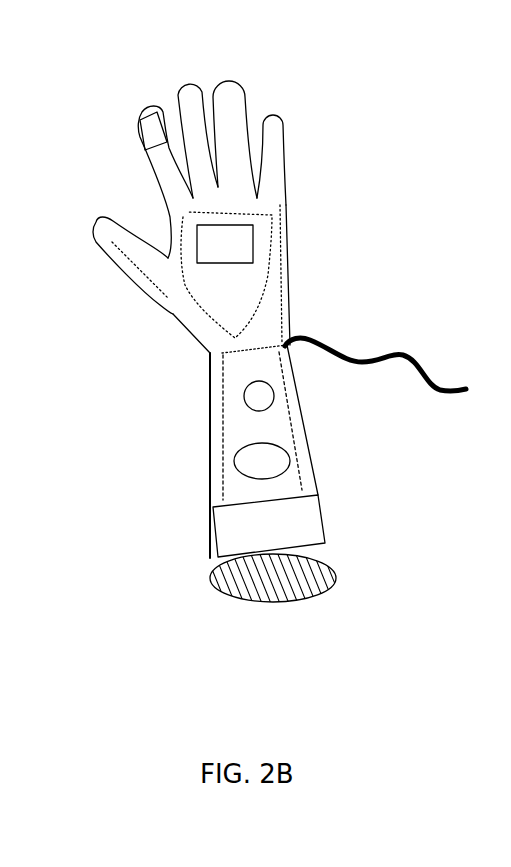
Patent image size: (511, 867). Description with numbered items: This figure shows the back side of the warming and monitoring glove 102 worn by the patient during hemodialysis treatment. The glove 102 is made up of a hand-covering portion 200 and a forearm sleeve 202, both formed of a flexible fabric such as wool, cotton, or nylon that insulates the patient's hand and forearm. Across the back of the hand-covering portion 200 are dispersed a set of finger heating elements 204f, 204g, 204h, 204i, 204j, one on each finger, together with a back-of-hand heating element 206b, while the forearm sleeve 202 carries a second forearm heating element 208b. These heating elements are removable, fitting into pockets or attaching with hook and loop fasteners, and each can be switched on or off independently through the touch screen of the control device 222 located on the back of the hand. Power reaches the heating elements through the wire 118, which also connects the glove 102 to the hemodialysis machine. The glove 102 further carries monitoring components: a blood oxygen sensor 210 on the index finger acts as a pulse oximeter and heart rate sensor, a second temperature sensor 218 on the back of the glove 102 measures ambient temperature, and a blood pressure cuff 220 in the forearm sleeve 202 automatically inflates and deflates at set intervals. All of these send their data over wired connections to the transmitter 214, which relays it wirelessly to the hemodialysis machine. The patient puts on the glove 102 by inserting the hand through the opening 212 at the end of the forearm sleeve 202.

The glove 102 is at (290, 327).
The wire 118 is at (422, 365).
The hand-covering portion 200 is at (187, 316).
The forearm sleeve 202 is at (313, 483).
The finger heating element 204f is at (128, 210).
The finger heating element 204g is at (137, 146).
The finger heating element 204h is at (177, 103).
The finger heating element 204i is at (243, 107).
The finger heating element 204j is at (296, 141).
The back-of-hand heating element 206b is at (283, 241).
The second forearm heating element 208b is at (212, 407).
The blood oxygen sensor 210 is at (140, 121).
The opening 212 is at (210, 556).
The transmitter 214 is at (262, 462).
The second temperature sensor 218 is at (259, 396).
The blood pressure cuff 220 is at (298, 522).
The control device 222 is at (243, 242).